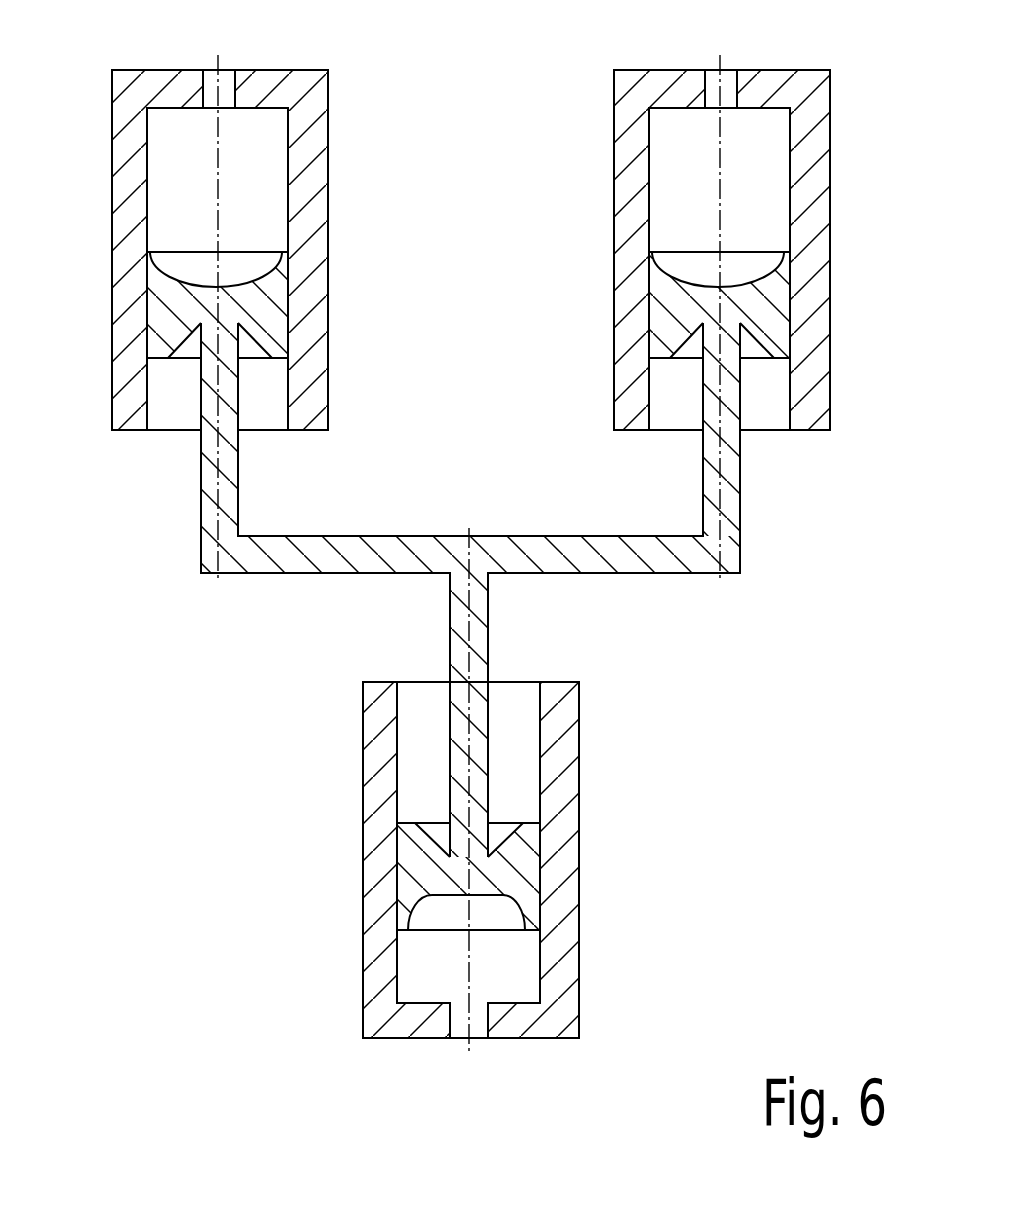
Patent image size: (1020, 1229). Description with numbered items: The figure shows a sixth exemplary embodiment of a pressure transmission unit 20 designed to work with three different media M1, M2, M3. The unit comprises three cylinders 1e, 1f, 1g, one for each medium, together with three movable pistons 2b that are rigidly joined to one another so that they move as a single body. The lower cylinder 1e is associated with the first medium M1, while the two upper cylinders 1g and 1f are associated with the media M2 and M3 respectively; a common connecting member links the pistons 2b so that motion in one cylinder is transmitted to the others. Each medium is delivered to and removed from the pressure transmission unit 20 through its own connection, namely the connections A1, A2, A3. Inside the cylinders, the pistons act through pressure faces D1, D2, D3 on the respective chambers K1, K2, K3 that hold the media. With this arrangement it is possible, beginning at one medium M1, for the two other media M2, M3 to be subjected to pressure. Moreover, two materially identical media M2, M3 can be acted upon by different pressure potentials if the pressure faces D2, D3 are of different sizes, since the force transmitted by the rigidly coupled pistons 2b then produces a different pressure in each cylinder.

The cylinder 1e is at (570, 783).
The cylinder 1f is at (820, 208).
The cylinder 1g is at (317, 212).
The movable piston 2b is at (530, 548).
The pressure transmission unit 20 is at (343, 765).
The chamber of first valve K1 is at (497, 967).
The chamber of third valve K2 is at (173, 135).
The chamber of second valve K3 is at (674, 128).
The connection A1 is at (461, 1043).
The connection A2 is at (229, 66).
The connection A3 is at (730, 64).
The sealing element of first valve D1 is at (442, 932).
The pressure face D2 is at (240, 238).
The pressure face D3 is at (683, 238).
The medium M1 is at (497, 958).
The medium M2 is at (188, 180).
The medium M3 is at (740, 175).